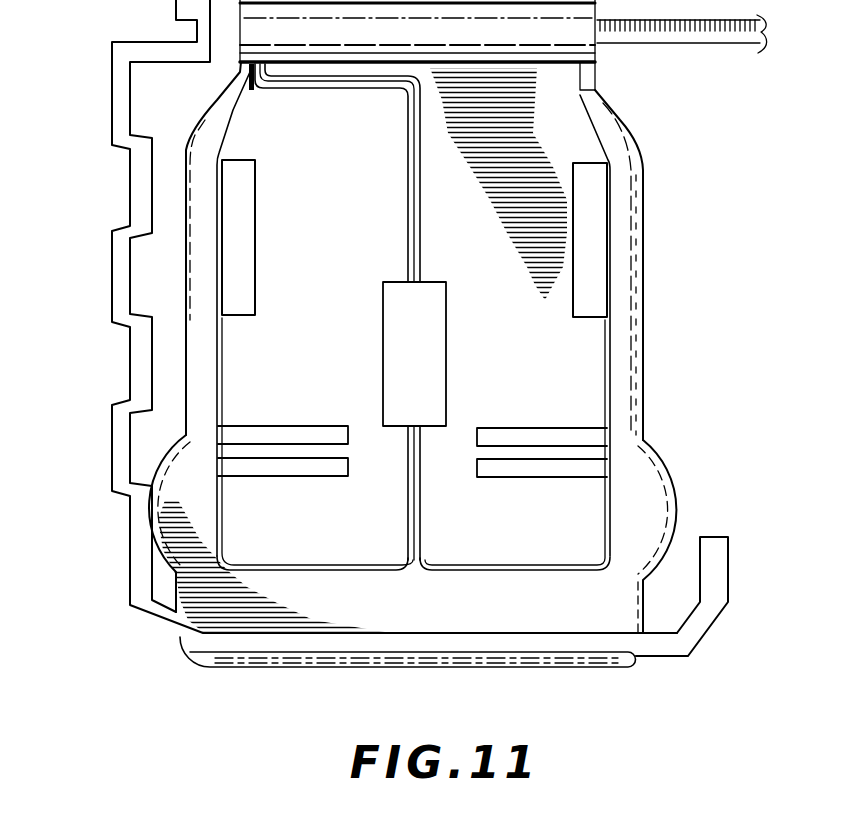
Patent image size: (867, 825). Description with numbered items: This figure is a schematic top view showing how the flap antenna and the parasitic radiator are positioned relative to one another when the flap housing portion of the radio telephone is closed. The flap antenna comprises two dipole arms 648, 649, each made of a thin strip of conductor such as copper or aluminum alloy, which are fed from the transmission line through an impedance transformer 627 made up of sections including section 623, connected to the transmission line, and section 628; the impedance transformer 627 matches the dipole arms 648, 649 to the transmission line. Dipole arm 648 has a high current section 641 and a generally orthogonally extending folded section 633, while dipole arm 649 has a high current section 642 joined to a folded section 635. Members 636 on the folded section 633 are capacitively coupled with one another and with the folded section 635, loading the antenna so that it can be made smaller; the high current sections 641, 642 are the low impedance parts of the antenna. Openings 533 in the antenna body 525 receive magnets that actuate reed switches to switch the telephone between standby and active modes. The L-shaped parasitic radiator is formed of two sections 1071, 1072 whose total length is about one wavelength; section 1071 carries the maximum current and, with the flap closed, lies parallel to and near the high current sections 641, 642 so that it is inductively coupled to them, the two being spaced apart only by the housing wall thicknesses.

The section of parasitic radiator 1072 is at (104, 293).
The antenna body 525 is at (598, 124).
The impedance transformer 627 is at (359, 204).
The section of impedance transformer 623 is at (432, 211).
The section of impedance transformer 628 is at (443, 296).
The openings 533 is at (254, 313).
The members 636 is at (345, 438).
The folded section 635 is at (222, 500).
The high current section 641 is at (264, 565).
The high current section 642 is at (470, 565).
The dipole arm 649 is at (303, 583).
The section of parasitic radiator 1071 is at (415, 590).
The folded section 633 is at (608, 521).
The dipole arm 648 is at (604, 584).